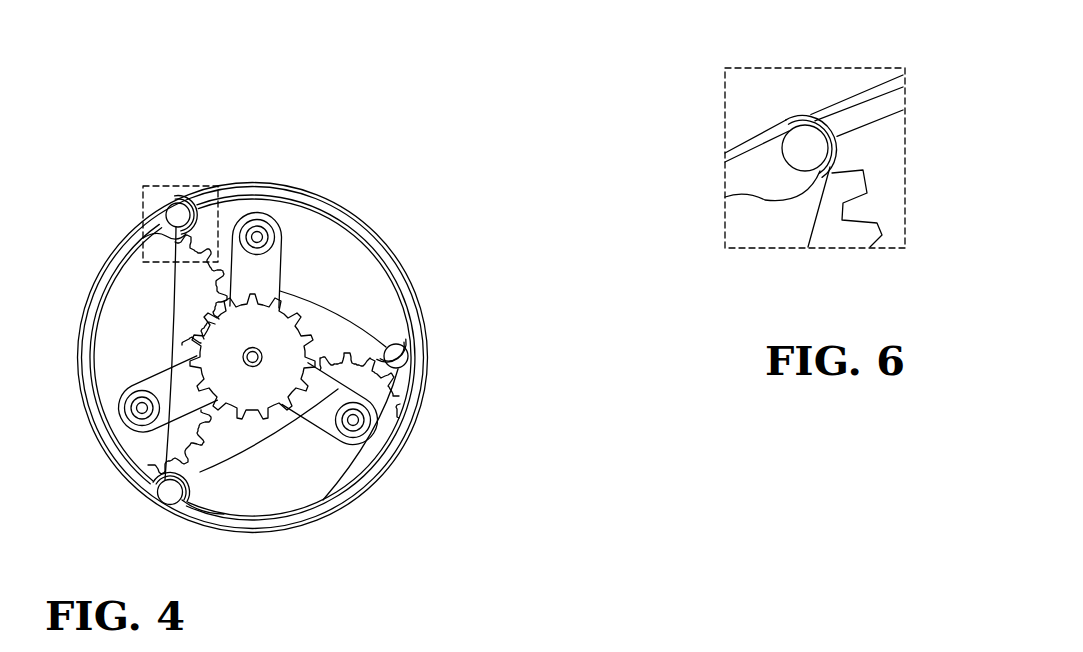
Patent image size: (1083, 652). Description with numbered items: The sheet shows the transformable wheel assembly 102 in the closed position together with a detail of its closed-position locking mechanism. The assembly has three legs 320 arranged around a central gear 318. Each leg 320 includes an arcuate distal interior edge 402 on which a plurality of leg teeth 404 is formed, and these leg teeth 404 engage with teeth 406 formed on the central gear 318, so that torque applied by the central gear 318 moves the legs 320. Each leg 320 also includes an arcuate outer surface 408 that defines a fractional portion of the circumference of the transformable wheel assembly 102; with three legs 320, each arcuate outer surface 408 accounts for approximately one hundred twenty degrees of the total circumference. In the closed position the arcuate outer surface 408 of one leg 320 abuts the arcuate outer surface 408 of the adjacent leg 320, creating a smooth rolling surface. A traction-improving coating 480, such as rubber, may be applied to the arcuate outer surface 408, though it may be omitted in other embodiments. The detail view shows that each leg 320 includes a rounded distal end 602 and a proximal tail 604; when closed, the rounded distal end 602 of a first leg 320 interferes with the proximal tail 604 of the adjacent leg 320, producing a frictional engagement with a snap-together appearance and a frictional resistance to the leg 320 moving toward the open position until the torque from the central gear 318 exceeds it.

In FIG. 4, the transformable wheel assembly 102 is at (253, 346).
In FIG. 4, the central gear 318 is at (226, 332).
In FIG. 4, the leg 320 is at (345, 249).
In FIG. 6, the leg 320 is at (788, 268).
In FIG. 4, the arcuate distal interior edge 402 is at (175, 478).
In FIG. 4, the leg teeth 404 is at (208, 441).
In FIG. 4, the teeth 406 is at (267, 402).
In FIG. 4, the arcuate outer surface 408 is at (312, 202).
In FIG. 4, the traction-improving coating 480 is at (253, 187).
In FIG. 6, the rounded distal end 602 is at (785, 143).
In FIG. 6, the proximal tail 604 is at (840, 113).